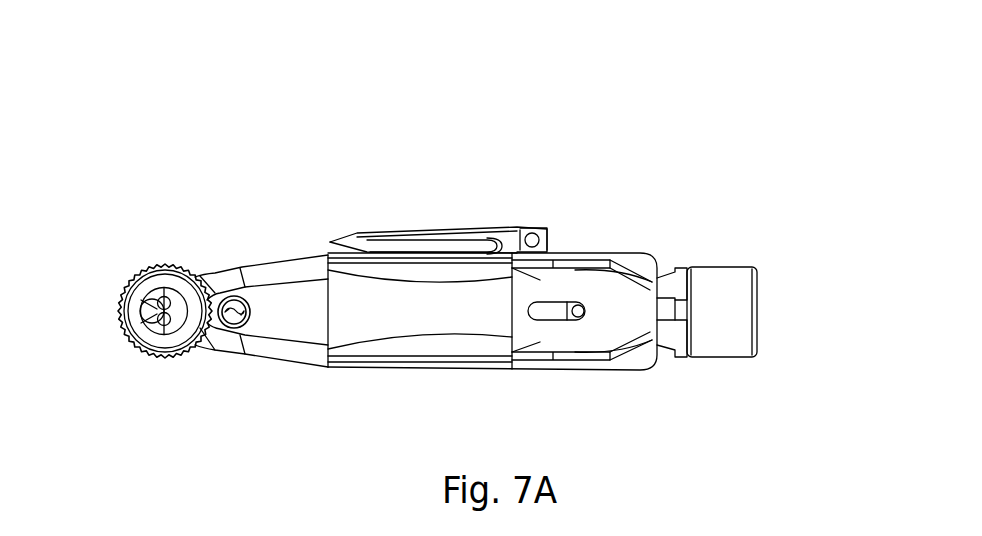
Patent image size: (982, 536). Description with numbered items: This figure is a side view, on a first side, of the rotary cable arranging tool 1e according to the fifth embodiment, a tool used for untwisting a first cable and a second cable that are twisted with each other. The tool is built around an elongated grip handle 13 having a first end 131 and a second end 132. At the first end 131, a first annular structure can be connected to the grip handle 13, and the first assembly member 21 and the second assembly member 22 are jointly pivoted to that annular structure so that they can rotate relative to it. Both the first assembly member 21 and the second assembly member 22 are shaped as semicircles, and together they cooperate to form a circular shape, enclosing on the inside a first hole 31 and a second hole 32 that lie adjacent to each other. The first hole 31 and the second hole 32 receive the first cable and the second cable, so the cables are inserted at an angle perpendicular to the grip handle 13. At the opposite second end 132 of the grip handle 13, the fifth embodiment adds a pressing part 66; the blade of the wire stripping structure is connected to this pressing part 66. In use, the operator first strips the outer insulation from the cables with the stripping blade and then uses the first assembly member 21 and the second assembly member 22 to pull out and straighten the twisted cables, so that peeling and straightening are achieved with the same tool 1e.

The rotary cable arranging tool 1e is at (777, 107).
The grip handle 13 is at (400, 350).
The first end 131 is at (163, 207).
The second end 132 is at (724, 213).
The first assembly member 21 is at (148, 357).
The second assembly member 22 is at (175, 357).
The first hole 31 is at (124, 328).
The second hole 32 is at (122, 297).
The pressing part 66 is at (724, 347).